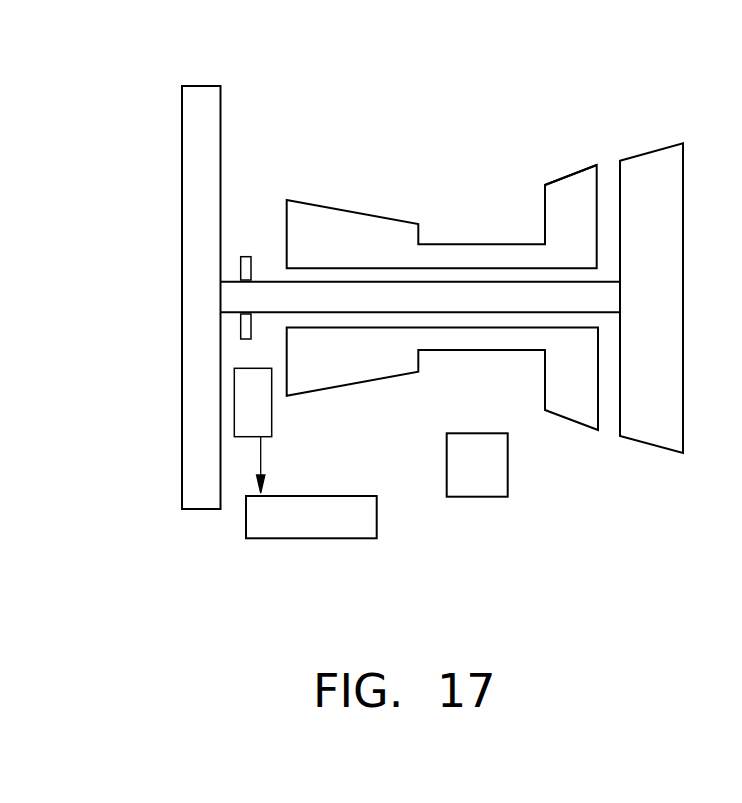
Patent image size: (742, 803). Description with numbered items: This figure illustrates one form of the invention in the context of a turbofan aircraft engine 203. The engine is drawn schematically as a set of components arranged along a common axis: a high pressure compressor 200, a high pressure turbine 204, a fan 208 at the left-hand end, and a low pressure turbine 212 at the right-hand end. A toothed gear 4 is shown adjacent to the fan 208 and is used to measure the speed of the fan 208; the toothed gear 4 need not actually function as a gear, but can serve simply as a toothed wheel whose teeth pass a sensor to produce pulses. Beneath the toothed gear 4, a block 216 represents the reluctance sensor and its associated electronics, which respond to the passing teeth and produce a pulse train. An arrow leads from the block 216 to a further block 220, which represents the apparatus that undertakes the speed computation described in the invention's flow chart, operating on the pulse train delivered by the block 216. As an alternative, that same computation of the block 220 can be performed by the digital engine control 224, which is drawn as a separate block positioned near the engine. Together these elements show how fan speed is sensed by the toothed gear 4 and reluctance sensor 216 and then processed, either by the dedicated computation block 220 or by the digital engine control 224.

The turbofan aircraft engine 203 is at (427, 78).
The fan 208 is at (221, 115).
The toothed gear 4 is at (247, 256).
The high pressure compressor 200 is at (322, 205).
The high pressure turbine 204 is at (570, 173).
The low pressure turbine 212 is at (652, 150).
The reluctance sensor and associated electronics 216 is at (272, 413).
The computation apparatus 220 is at (334, 527).
The digital engine control 224 is at (454, 472).